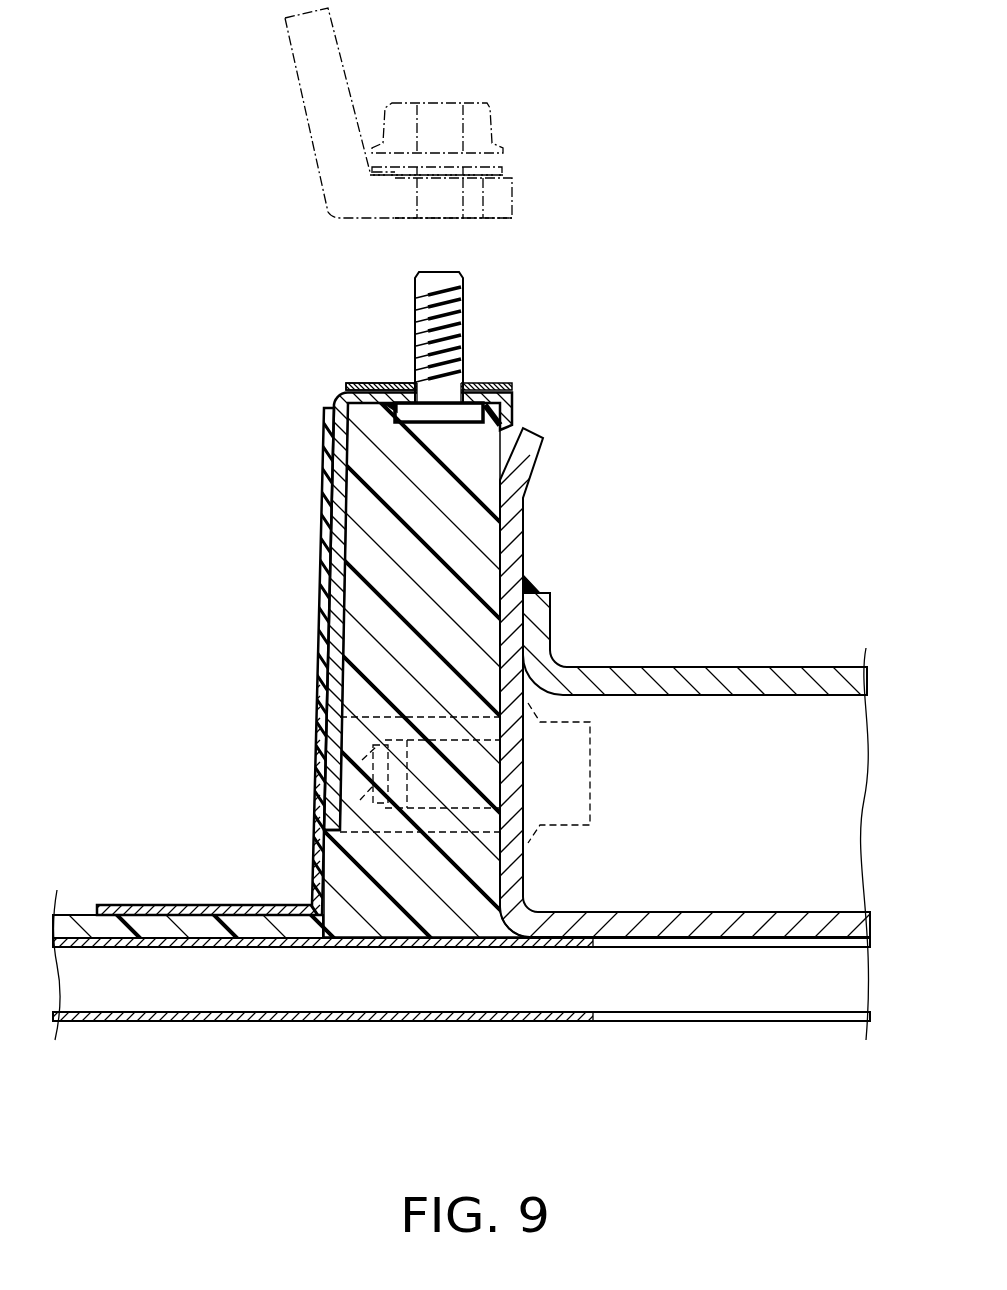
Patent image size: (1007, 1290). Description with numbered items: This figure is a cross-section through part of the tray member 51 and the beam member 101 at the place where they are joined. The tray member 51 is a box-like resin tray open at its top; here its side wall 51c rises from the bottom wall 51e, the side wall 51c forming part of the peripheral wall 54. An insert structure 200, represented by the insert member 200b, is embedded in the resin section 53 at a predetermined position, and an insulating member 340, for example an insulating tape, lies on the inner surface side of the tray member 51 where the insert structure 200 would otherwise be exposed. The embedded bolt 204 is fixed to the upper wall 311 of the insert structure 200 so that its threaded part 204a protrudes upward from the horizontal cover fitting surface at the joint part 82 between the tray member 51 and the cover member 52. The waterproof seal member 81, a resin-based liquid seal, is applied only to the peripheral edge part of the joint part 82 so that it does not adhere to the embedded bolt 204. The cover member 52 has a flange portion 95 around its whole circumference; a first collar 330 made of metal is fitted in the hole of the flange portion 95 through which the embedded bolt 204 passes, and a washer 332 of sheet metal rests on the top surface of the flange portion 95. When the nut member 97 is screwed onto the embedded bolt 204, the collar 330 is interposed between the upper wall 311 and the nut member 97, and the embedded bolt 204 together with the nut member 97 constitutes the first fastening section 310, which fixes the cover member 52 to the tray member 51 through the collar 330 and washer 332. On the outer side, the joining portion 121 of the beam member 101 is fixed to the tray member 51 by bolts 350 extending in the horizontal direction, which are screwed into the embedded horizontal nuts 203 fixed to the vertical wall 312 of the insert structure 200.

The cover member 52 is at (340, 47).
The nut member 97 is at (492, 125).
The washer 332 is at (485, 170).
The flange portion 95 is at (498, 200).
The first collar 330 is at (472, 208).
The embedded bolt 204 is at (456, 321).
The threaded part 204a is at (465, 315).
The first fastening section 310 is at (427, 386).
The waterproof seal member 81 is at (373, 383).
The joint part 82 is at (507, 377).
The insert structure 200 is at (302, 667).
The insert member 200b is at (333, 480).
The insulating member 340 is at (322, 574).
The upper wall 311 is at (493, 395).
The tray member 51 is at (285, 949).
The side wall 51c is at (440, 537).
The bottom wall 51e is at (90, 925).
The resin section 53 is at (487, 580).
The peripheral wall 54 is at (467, 873).
The joining portion 121 is at (705, 667).
The beam member 101 is at (515, 1020).
The embedded horizontal nut 203 is at (383, 717).
The vertical wall 312 is at (372, 760).
The bolt 350 is at (567, 780).